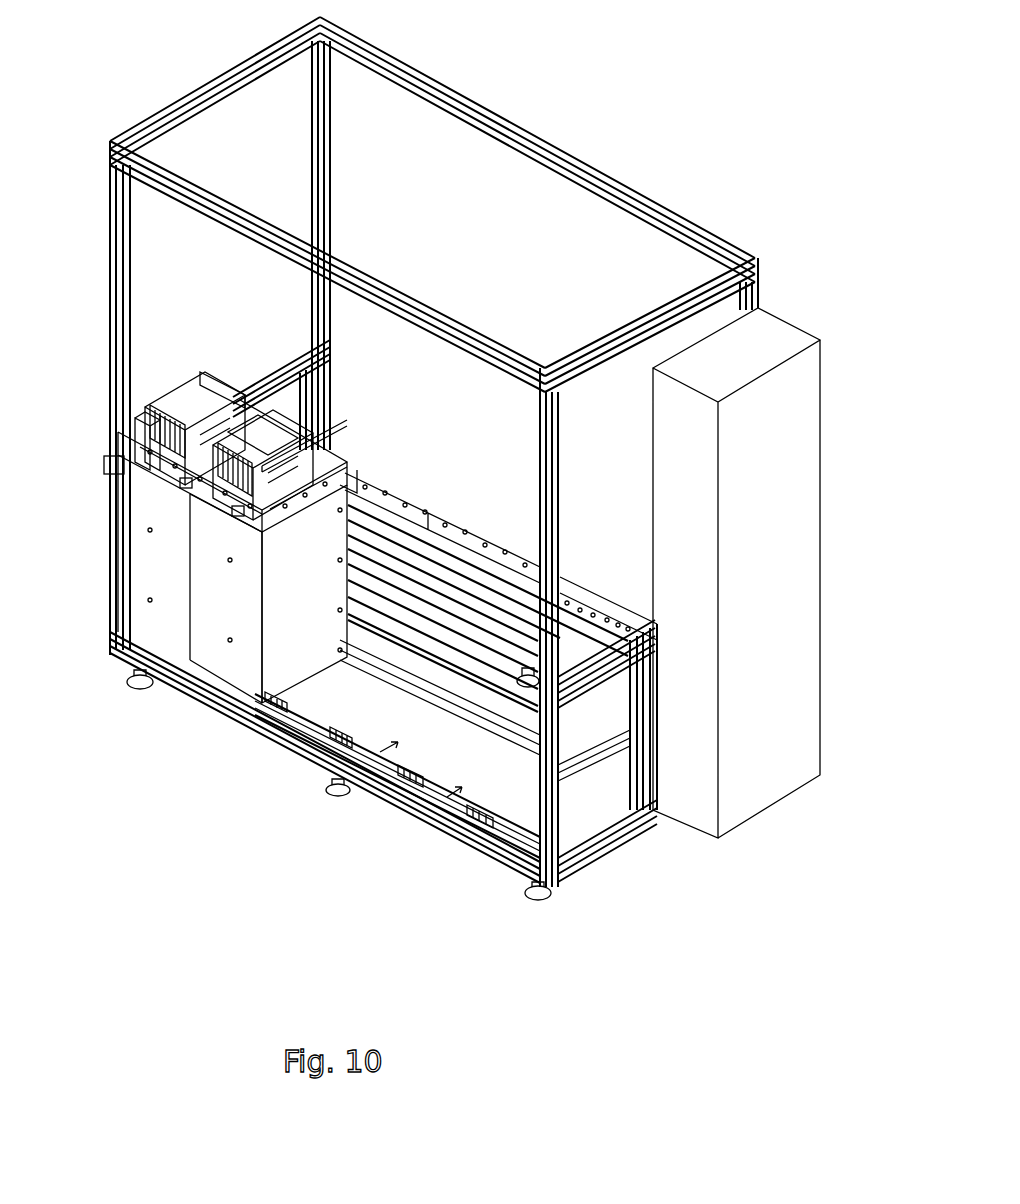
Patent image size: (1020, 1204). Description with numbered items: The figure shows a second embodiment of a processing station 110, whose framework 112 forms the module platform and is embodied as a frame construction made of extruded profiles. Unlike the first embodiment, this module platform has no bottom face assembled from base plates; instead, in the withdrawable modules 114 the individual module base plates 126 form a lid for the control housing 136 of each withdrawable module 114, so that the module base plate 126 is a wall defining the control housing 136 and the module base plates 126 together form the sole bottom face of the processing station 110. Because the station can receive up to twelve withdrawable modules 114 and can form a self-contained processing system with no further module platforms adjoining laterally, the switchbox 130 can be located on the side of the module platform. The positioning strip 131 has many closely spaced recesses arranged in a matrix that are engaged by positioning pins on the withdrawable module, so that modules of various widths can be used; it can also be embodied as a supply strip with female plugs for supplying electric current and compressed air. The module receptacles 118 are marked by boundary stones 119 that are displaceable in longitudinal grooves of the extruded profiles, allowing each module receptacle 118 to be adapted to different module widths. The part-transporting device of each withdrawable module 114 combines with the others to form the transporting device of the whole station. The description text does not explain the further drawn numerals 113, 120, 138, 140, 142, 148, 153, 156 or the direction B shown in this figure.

The processing station 110 is at (710, 61).
The framework 112 is at (700, 227).
The mounting plate 113 is at (126, 376).
The withdrawable module 114 is at (170, 643).
The module receptacle 118 is at (350, 793).
The boundary stone 119 is at (328, 732).
The leveling foot 120 is at (140, 692).
The module base plate 126 is at (332, 455).
The switchbox 130 is at (785, 622).
The positioning strip 131 is at (395, 491).
The control housing 136 is at (312, 622).
The connector block 138 is at (140, 415).
The test unit 140 is at (190, 385).
The connector 142 is at (150, 425).
The test unit 148 is at (235, 393).
The support bar 153 is at (327, 447).
The clamp 156 is at (207, 375).
The direction B is at (215, 638).